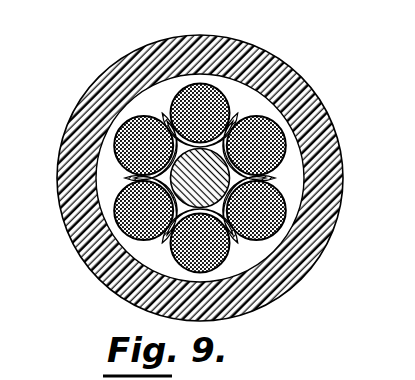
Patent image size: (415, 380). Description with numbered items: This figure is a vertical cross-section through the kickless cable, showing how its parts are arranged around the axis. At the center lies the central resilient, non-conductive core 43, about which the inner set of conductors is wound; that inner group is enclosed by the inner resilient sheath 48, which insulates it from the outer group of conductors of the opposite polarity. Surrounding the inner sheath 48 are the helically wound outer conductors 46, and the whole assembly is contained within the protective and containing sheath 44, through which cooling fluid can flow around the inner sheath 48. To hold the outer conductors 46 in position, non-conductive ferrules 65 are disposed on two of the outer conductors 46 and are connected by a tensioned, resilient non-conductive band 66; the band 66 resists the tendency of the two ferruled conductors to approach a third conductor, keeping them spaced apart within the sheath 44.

The central resilient, non-conductive core 43 is at (212, 190).
The protective and containing sheath 44 is at (127, 63).
The outer set of conductors 46 is at (200, 84).
The inner resilient sheath 48 is at (248, 108).
The non-conductive ferrules 65 is at (118, 200).
The tensioned, resilient non-conductive band 66 is at (165, 87).